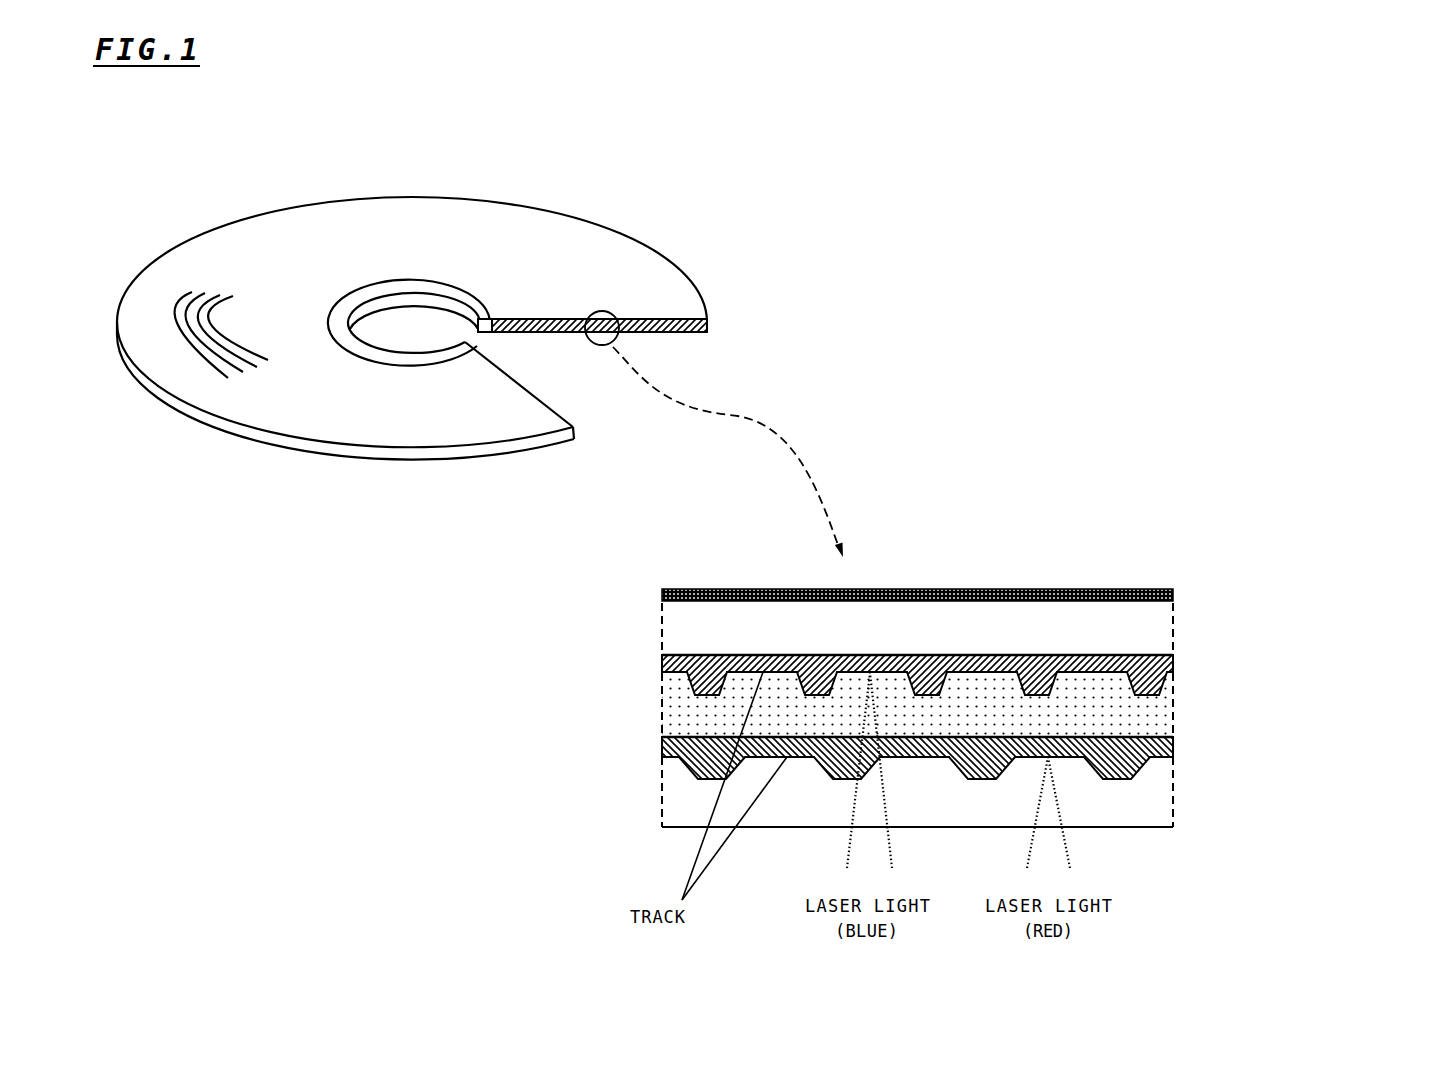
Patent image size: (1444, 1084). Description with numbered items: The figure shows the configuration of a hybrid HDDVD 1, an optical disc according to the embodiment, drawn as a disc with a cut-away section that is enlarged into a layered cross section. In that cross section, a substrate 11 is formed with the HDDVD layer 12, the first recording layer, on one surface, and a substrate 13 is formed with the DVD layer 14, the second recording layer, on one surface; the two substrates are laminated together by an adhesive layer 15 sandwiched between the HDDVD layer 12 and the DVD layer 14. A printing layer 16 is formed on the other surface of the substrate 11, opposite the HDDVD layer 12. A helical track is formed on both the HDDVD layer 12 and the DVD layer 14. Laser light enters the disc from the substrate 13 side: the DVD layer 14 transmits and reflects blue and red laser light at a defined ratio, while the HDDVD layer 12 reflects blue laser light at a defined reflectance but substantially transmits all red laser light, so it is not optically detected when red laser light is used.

The hybrid HDDVD 1 is at (538, 218).
The substrate 11 is at (1200, 626).
The HDDVD layer 12 is at (643, 663).
The substrate 13 is at (1200, 797).
The DVD layer 14 is at (643, 748).
The adhesive layer 15 is at (1200, 710).
The printing layer 16 is at (1067, 552).